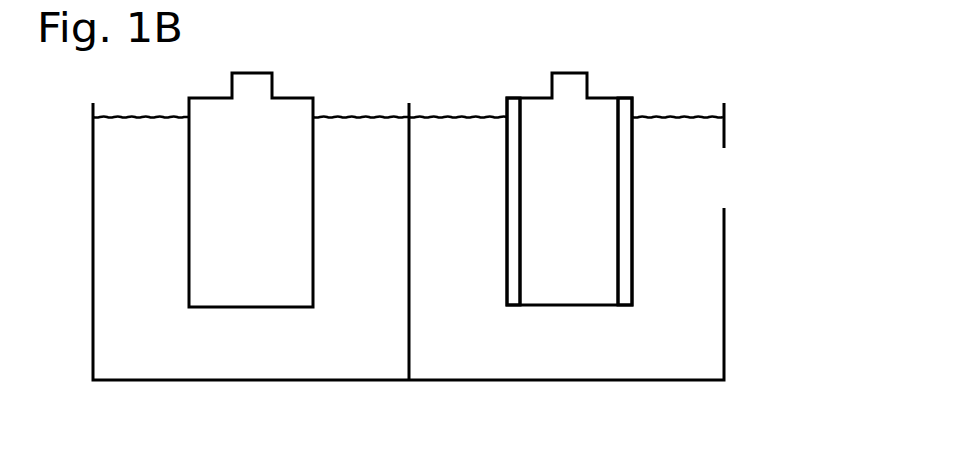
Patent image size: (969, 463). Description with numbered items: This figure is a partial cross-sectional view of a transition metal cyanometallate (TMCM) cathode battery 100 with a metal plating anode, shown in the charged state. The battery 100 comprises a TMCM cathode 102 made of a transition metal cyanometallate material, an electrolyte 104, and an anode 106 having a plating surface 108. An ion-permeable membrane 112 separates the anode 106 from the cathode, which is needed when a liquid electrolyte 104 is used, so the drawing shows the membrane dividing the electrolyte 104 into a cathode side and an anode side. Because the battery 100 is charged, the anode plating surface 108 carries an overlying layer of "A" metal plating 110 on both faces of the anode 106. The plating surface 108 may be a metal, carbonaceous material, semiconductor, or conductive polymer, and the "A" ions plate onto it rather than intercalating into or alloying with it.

The battery 100 is at (569, 34).
The TMCM cathode 102 is at (272, 242).
The electrolyte 104 is at (273, 366).
The anode 106 is at (614, 71).
The plating surface 108 is at (518, 212).
The metal plating 110 is at (513, 98).
The ion-permeable membrane 112 is at (411, 360).